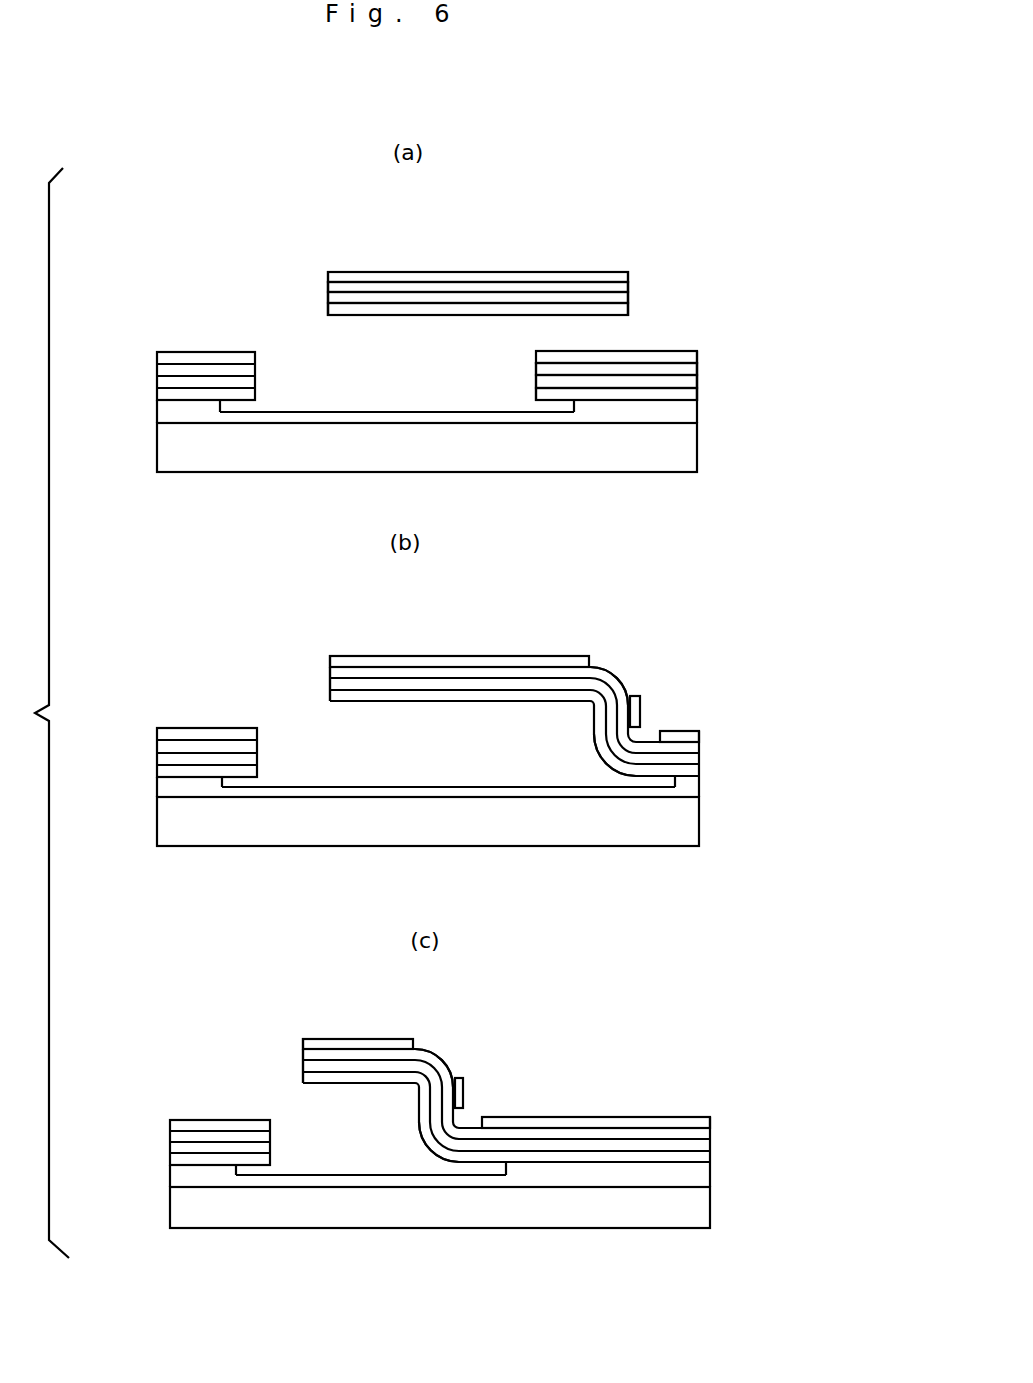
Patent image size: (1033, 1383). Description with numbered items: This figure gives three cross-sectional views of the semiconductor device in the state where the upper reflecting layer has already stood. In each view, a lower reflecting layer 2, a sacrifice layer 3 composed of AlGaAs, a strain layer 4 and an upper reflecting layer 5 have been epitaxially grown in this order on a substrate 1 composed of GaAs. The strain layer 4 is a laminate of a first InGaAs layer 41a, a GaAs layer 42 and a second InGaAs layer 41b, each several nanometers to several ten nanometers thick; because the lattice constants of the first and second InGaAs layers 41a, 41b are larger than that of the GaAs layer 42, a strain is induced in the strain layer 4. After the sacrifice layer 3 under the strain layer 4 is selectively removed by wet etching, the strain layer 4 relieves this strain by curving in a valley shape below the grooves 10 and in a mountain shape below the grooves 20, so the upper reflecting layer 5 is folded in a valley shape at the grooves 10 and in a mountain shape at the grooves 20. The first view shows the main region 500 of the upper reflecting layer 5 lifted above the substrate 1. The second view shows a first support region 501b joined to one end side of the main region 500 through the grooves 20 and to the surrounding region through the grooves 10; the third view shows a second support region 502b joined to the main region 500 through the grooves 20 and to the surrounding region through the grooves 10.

The substrate 1 is at (685, 448).
The lower reflecting layer 2 is at (691, 414).
The sacrifice layer 3 is at (690, 407).
The strain layer 4 is at (232, 250).
The upper reflecting layer 5 is at (328, 273).
The grooves 10 is at (642, 740).
The grooves 20 is at (620, 668).
The first InGaAs layer 41a is at (335, 313).
The second InGaAs layer 41b is at (335, 287).
The GaAs layer 42 is at (338, 298).
The main region 500 is at (440, 270).
The first support region 501b is at (642, 700).
The second support region 502b is at (462, 1085).